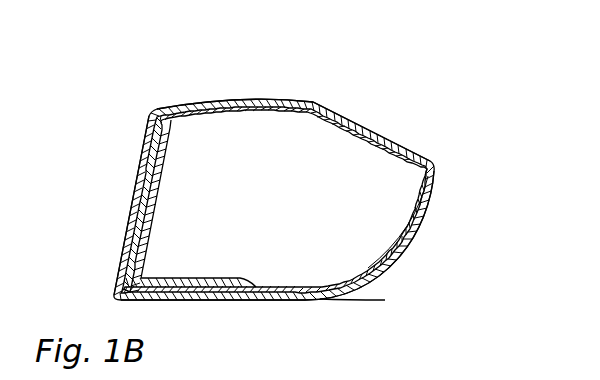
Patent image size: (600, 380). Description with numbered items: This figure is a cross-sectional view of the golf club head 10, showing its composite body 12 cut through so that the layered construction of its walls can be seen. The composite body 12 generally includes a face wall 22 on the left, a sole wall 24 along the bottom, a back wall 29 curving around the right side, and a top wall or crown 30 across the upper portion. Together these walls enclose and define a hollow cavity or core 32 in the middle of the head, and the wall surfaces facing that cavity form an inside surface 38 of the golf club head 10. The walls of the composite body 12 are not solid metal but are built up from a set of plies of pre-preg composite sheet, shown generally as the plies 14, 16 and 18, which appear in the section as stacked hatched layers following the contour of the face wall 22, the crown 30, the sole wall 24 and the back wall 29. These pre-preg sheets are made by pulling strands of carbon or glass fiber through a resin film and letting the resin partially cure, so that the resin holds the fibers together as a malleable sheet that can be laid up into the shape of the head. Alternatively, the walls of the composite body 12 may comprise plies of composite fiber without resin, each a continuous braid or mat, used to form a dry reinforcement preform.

The golf club head 10 is at (441, 99).
The composite body 12 is at (350, 290).
The ply of pre-preg composite sheet 14 is at (148, 114).
The ply of pre-preg composite sheet 16 is at (186, 108).
The ply of pre-preg composite sheet 18 is at (117, 286).
The face wall 22 is at (135, 181).
The sole wall 24 is at (273, 301).
The back wall 29 is at (432, 195).
The top wall or crown 30 is at (250, 104).
The hollow cavity or core 32 is at (276, 211).
The inside surface 38 is at (295, 117).